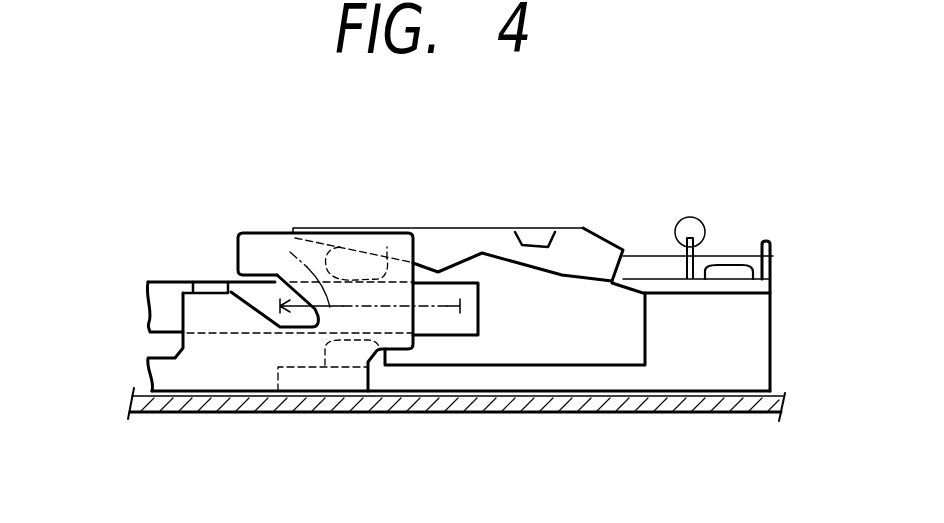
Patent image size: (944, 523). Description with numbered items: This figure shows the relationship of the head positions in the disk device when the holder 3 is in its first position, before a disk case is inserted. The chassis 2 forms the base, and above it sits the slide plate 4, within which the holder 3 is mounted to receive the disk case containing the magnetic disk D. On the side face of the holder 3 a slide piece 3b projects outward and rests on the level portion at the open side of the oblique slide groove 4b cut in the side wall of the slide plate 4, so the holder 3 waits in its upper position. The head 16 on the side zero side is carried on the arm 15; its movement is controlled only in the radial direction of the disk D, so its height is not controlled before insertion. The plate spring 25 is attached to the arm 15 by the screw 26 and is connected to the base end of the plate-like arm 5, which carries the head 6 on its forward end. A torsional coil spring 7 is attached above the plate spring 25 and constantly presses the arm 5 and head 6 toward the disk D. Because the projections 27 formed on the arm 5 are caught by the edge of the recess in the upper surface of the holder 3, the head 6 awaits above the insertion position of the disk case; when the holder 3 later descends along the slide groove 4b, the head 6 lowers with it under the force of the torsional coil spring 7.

The chassis 2 is at (678, 403).
The holder 3 is at (150, 303).
The slide piece 3b is at (210, 282).
The slide plate 4 is at (237, 247).
The slide groove 4b is at (253, 315).
The arm 5 is at (452, 237).
The head 6 is at (367, 257).
The torsional coil spring 7 is at (653, 256).
The arm 15 is at (530, 380).
The head 16 is at (348, 357).
The plate spring 25 is at (733, 287).
The screw 26 is at (728, 266).
The projection 27 is at (540, 232).
The magnetic disk D is at (290, 252).